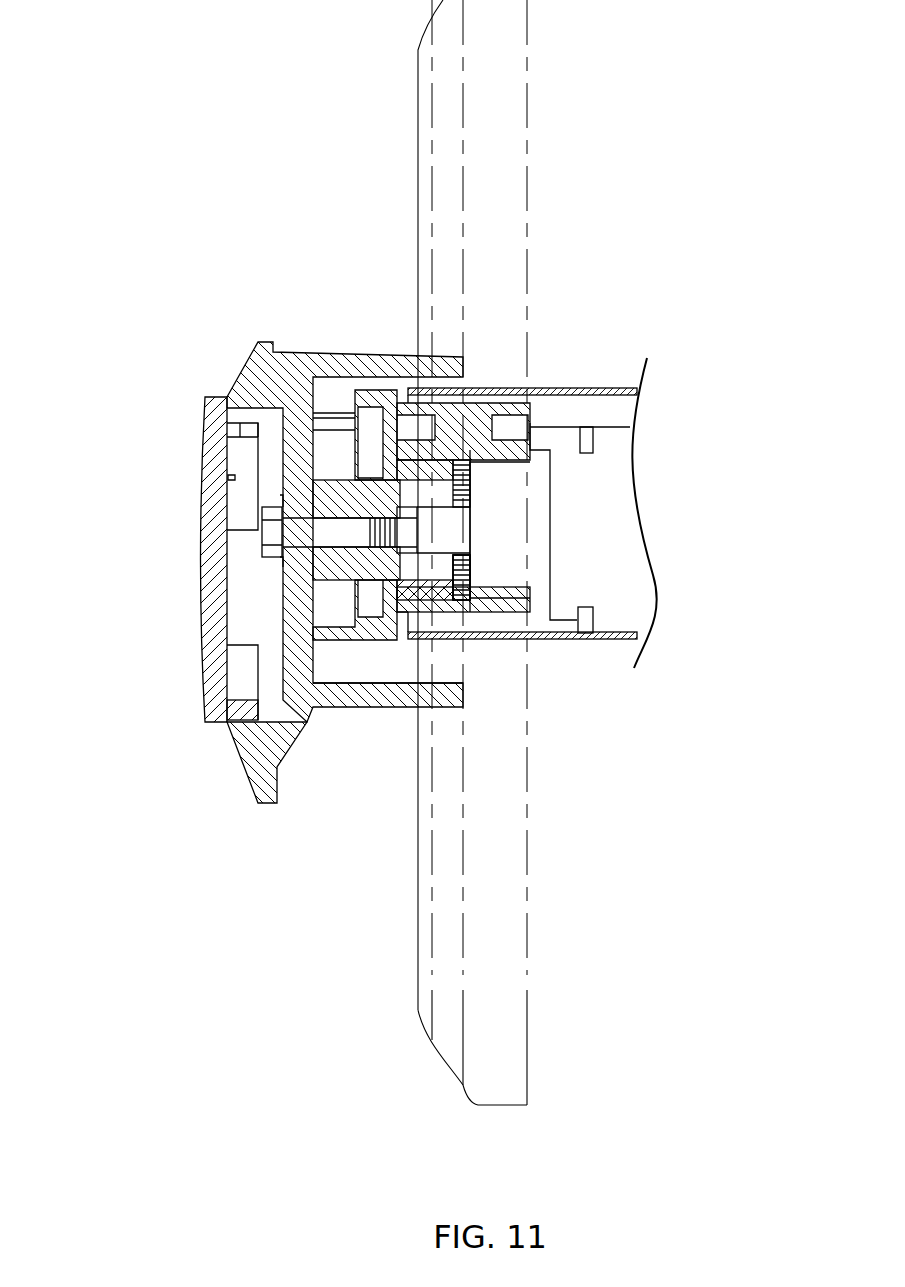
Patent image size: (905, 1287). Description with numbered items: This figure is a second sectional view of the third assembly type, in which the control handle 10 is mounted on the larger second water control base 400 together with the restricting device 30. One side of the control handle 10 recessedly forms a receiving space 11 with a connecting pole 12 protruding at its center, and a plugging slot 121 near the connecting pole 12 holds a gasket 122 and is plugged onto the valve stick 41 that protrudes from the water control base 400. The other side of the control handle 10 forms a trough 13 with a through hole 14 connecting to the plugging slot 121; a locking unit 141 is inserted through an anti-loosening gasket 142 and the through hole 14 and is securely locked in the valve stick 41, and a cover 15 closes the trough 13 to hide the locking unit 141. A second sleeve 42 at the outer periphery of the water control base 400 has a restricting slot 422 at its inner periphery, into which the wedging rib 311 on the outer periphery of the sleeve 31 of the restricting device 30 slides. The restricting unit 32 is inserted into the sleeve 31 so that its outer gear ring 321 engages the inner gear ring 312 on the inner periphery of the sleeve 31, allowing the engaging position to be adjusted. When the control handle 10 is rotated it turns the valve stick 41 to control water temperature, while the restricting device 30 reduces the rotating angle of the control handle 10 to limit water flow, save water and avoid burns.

The control handle 10 is at (247, 748).
The receiving space 11 is at (352, 672).
The connecting pole 12 is at (298, 358).
The trough 13 is at (258, 625).
The through hole 14 is at (290, 440).
The cover 15 is at (213, 567).
The restricting device 30 is at (495, 402).
The sleeve 31 is at (532, 608).
The restricting unit 32 is at (378, 395).
The valve stick 41 is at (465, 485).
The second sleeve 42 is at (497, 622).
The plugging slot 121 is at (465, 485).
The gasket 122 is at (412, 618).
The locking unit 141 is at (280, 497).
The anti-loosening gasket 142 is at (283, 478).
The wedging rib 311 is at (470, 388).
The inner gear ring 312 is at (458, 595).
The outer gear ring 321 is at (458, 595).
The second water control base 400 is at (575, 563).
The restricting slot 422 is at (565, 408).